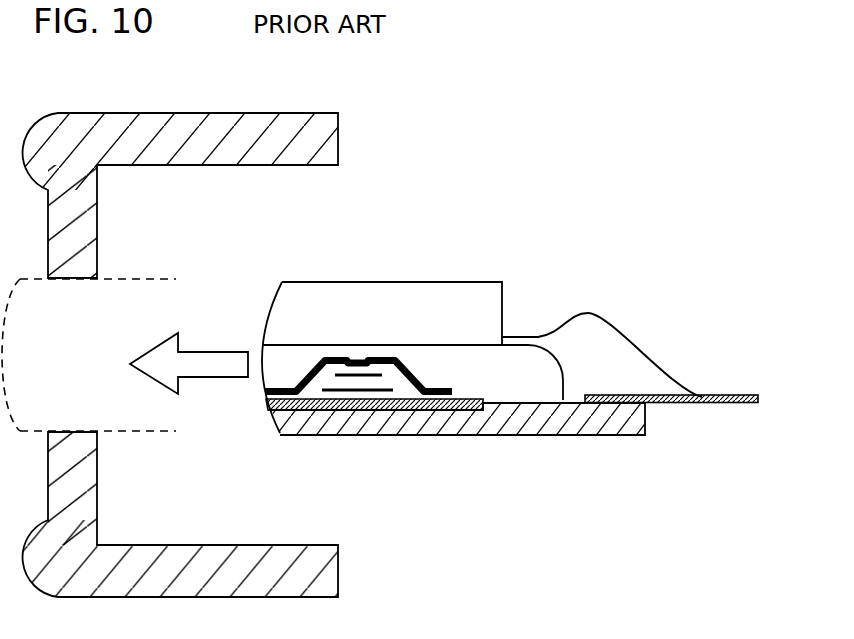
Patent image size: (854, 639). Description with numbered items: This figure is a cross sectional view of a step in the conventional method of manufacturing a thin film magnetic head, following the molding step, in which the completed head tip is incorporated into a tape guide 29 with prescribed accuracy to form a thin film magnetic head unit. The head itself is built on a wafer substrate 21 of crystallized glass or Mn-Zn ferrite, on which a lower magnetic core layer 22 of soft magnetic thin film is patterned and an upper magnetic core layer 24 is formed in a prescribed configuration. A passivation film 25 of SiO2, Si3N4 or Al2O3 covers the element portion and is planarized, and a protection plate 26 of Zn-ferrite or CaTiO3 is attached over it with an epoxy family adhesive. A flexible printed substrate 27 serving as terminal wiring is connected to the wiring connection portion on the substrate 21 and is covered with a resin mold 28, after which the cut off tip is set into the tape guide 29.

The wafer substrate 21 is at (586, 415).
The lower magnetic core layer 22 is at (443, 410).
The upper magnetic core layer 24 is at (390, 357).
The passivation film 25 is at (515, 383).
The protection plate 26 is at (470, 290).
The flexible printed substrate 27 is at (749, 395).
The resin mold 28 is at (628, 358).
The tape guide 29 is at (297, 158).